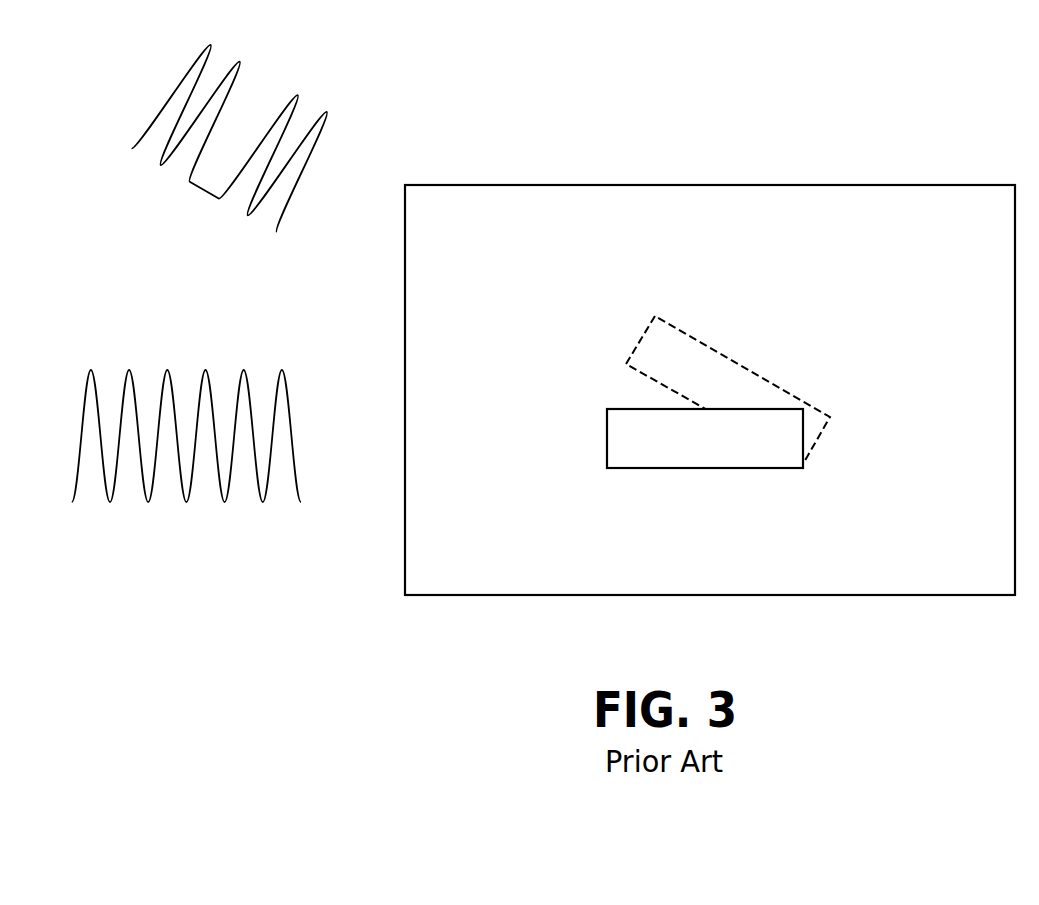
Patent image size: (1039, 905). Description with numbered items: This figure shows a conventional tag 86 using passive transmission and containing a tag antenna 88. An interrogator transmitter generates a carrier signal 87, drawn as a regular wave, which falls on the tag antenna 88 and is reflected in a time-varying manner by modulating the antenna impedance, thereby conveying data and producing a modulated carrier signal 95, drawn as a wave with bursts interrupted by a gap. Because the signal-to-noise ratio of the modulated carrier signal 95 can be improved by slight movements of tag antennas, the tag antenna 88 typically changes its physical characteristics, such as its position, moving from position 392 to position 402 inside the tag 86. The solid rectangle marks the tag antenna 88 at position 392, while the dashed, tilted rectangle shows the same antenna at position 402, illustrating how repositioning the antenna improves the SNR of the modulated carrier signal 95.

The modulated carrier signal 95 is at (279, 53).
The carrier signal 87 is at (216, 541).
The tag 86 is at (467, 580).
The tag antenna 88 is at (783, 457).
The position 402 is at (762, 334).
The position 392 is at (716, 488).